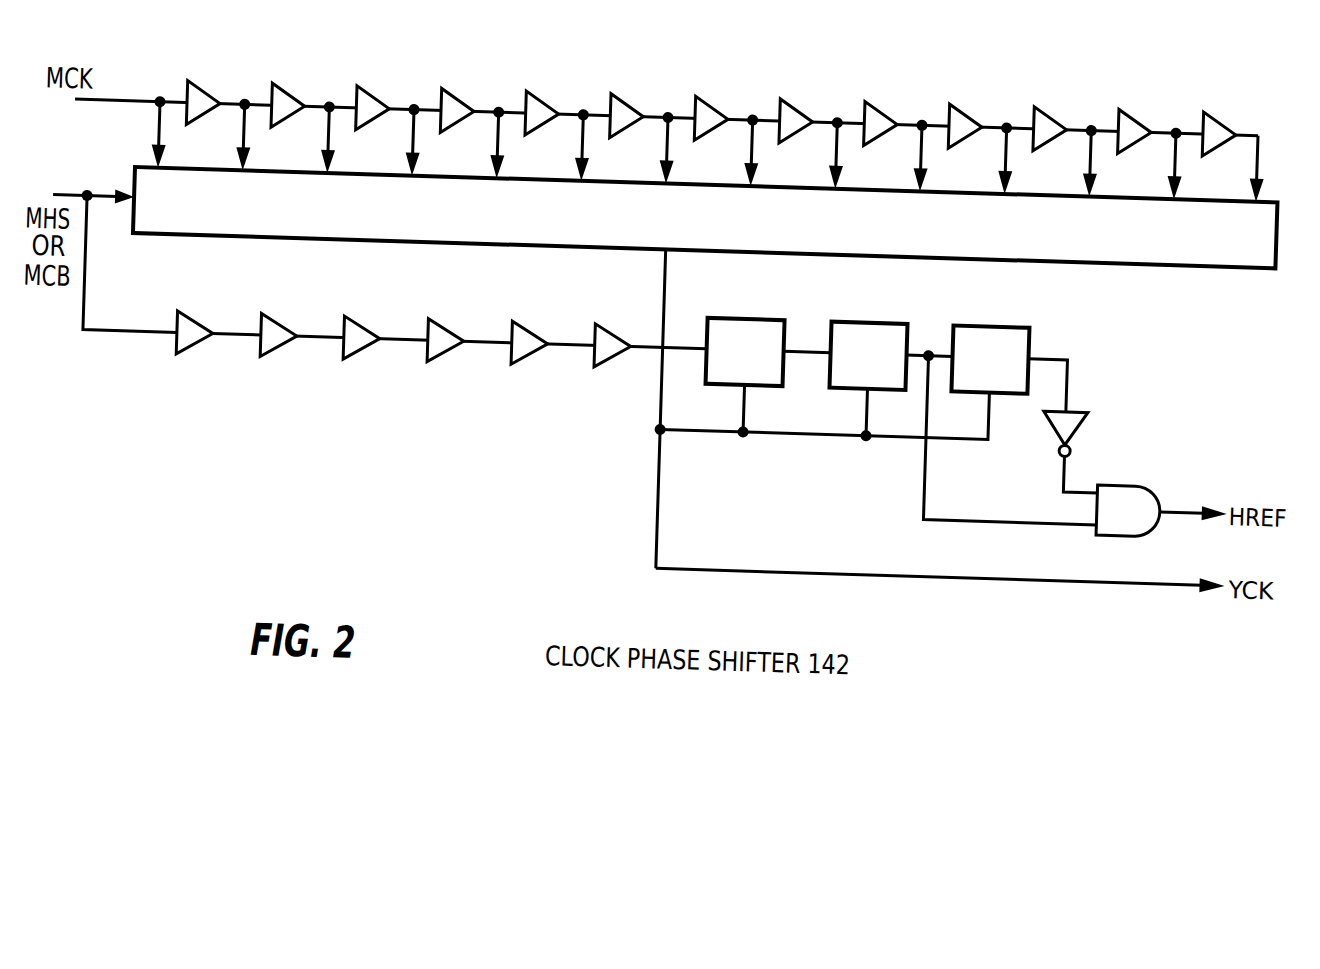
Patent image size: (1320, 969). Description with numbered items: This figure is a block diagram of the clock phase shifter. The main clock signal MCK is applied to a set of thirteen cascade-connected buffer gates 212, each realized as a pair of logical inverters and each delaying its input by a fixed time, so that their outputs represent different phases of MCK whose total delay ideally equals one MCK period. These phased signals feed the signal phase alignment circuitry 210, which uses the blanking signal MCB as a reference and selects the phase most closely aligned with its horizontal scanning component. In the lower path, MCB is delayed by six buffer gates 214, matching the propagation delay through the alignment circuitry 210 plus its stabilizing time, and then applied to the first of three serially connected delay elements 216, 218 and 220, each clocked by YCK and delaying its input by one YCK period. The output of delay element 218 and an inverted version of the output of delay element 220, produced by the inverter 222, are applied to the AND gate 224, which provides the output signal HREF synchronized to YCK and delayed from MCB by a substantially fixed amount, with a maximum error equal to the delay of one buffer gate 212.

The signal phase alignment circuitry 210 is at (1133, 234).
The buffer gates 212 is at (352, 83).
The buffer gates 214 is at (346, 352).
The delay element 216 is at (752, 299).
The delay element 218 is at (890, 300).
The delay element 220 is at (994, 300).
The inverter 222 is at (1092, 395).
The AND gate 224 is at (1157, 456).